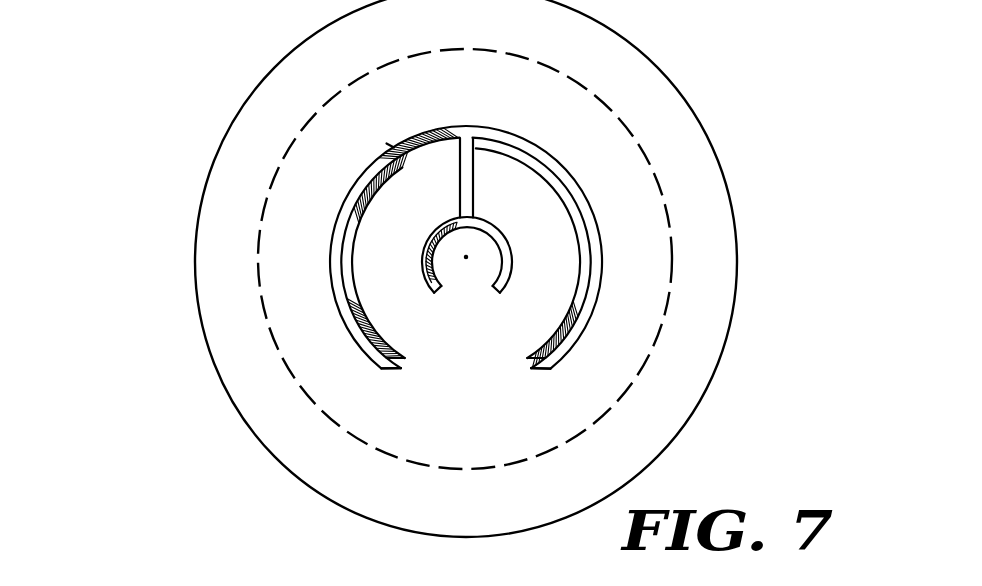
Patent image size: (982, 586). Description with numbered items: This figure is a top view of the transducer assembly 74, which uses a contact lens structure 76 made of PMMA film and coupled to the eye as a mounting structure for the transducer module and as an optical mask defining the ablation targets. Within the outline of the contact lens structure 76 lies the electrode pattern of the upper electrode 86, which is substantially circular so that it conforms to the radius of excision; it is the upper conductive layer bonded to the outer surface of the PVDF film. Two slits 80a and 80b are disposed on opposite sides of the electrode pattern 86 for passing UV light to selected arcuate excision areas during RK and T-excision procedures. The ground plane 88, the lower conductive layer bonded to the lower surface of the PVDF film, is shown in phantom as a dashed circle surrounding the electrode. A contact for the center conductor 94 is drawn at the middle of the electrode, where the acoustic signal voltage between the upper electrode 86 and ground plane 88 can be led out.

The transducer assembly 74 is at (283, 463).
The contact lens structure 76 is at (723, 58).
The ground plane 88 is at (650, 160).
The upper electrode 86 is at (510, 133).
The slit 80a is at (362, 346).
The slit 80b is at (583, 323).
The contact for center conductor 94 is at (432, 281).